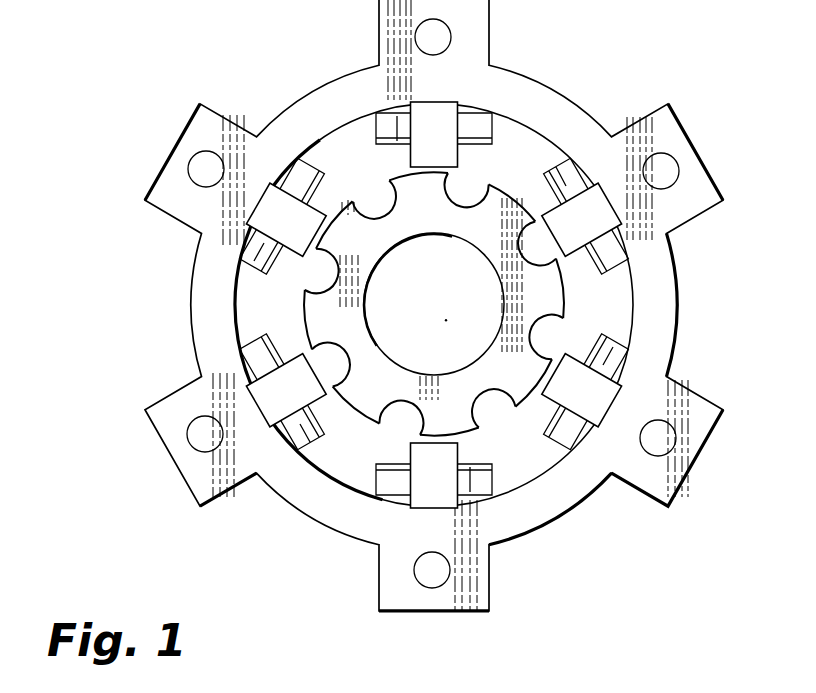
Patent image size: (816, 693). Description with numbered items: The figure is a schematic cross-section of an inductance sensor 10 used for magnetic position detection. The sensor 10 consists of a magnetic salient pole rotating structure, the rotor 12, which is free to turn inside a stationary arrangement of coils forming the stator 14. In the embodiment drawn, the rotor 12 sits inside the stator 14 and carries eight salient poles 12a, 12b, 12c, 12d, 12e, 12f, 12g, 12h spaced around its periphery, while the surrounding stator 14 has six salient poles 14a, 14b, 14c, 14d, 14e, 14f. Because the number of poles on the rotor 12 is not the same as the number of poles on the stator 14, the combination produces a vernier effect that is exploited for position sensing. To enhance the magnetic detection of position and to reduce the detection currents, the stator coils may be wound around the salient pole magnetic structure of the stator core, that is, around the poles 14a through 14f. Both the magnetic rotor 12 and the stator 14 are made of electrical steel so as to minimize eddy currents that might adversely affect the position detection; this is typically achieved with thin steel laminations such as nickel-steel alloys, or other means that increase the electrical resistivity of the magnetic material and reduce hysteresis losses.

The inductance sensor 10 is at (451, 305).
The rotor 12 is at (531, 303).
The rotor salient pole 12a is at (434, 212).
The rotor salient pole 12b is at (509, 234).
The rotor salient pole 12c is at (552, 309).
The rotor salient pole 12d is at (532, 386).
The rotor salient pole 12e is at (462, 427).
The rotor salient pole 12f is at (386, 402).
The rotor salient pole 12g is at (346, 334).
The rotor salient pole 12h is at (366, 249).
The stator 14 is at (449, 305).
The stator salient pole 14a is at (449, 151).
The stator salient pole 14b is at (587, 241).
The stator salient pole 14c is at (590, 404).
The stator salient pole 14d is at (449, 487).
The stator salient pole 14e is at (322, 397).
The stator salient pole 14f is at (314, 239).